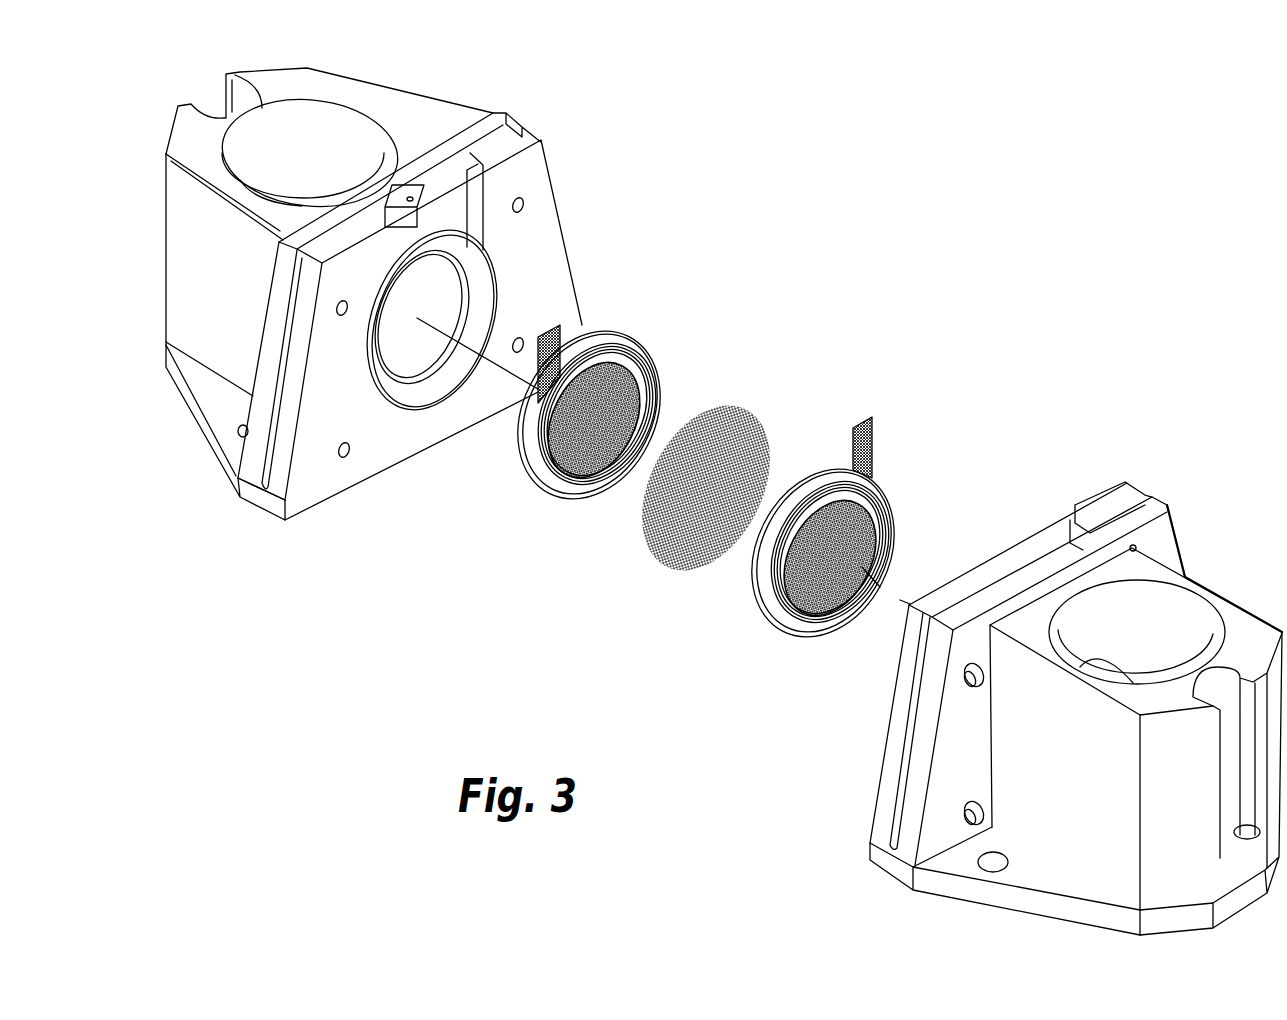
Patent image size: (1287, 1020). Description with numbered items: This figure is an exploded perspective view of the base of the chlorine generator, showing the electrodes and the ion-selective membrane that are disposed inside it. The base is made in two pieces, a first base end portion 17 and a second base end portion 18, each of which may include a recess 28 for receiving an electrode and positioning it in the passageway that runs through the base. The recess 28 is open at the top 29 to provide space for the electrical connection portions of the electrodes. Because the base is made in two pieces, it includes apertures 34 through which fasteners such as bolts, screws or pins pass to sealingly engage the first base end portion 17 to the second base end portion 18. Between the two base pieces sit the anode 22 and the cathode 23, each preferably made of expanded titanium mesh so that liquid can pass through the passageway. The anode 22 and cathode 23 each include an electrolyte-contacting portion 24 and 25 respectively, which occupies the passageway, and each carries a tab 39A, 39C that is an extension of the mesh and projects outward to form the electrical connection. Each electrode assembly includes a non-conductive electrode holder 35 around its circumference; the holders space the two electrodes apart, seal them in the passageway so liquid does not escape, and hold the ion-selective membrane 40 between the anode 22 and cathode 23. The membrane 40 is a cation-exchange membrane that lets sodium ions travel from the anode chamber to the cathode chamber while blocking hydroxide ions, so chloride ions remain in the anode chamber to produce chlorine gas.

The first base end portion 17 is at (1143, 568).
The second base end portion 18 is at (322, 84).
The anode 22 is at (902, 490).
The cathode 23 is at (640, 329).
The electrolyte-contacting portion of anode 24 is at (855, 545).
The electrolyte-contacting portion of cathode 25 is at (637, 382).
The recess 28 is at (452, 375).
The top of recess 29 is at (430, 230).
The aperture 34 is at (345, 457).
The electrode holder 35 is at (574, 485).
The tab 39A is at (873, 447).
The tab 39C is at (580, 338).
The ion-selective membrane 40 is at (702, 530).